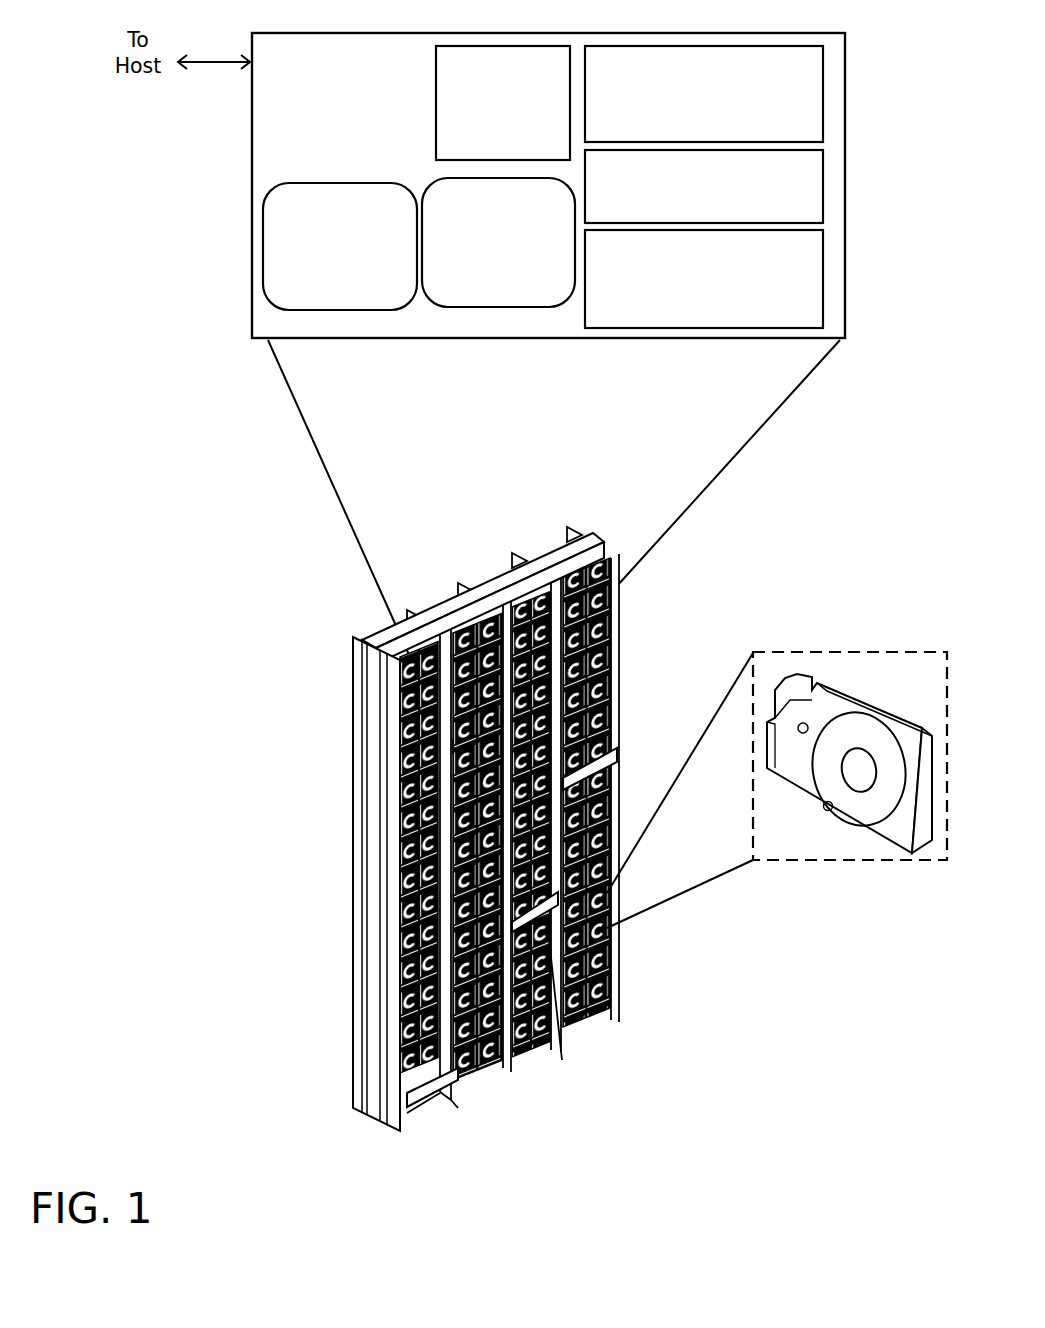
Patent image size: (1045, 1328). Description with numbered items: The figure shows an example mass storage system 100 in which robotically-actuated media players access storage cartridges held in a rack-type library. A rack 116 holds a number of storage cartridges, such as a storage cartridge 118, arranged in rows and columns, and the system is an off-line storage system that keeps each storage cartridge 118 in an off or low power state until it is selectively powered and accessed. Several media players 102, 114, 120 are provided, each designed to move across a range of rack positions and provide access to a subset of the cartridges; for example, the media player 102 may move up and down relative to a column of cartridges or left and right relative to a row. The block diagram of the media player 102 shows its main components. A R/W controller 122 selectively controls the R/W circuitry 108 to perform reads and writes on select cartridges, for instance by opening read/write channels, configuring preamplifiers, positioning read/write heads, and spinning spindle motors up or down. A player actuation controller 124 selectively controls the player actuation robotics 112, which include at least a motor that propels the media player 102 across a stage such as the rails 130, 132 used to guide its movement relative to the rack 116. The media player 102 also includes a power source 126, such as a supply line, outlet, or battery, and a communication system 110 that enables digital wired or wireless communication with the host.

The mass storage system 100 is at (198, 460).
The media player 102 is at (458, 740).
The R/W circuitry 108 is at (704, 186).
The communication system 110 is at (704, 279).
The player actuation robotics 112 is at (704, 94).
The media player 114 is at (617, 753).
The rack 116 is at (367, 823).
The storage cartridge 118 is at (820, 862).
The media player 120 is at (558, 1030).
The R/W controller 122 is at (340, 246).
The player actuation controller 124 is at (498, 242).
The power source 126 is at (503, 103).
The rail 130 is at (605, 588).
The rail 132 is at (548, 590).